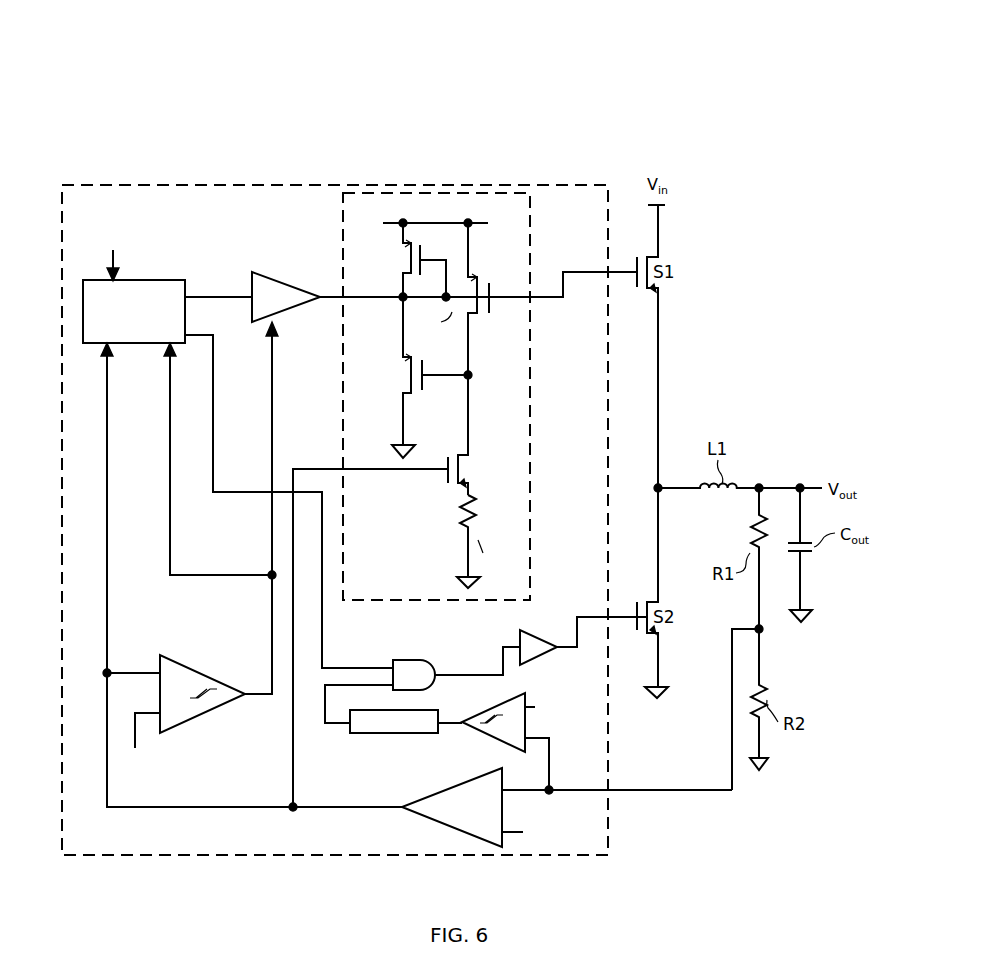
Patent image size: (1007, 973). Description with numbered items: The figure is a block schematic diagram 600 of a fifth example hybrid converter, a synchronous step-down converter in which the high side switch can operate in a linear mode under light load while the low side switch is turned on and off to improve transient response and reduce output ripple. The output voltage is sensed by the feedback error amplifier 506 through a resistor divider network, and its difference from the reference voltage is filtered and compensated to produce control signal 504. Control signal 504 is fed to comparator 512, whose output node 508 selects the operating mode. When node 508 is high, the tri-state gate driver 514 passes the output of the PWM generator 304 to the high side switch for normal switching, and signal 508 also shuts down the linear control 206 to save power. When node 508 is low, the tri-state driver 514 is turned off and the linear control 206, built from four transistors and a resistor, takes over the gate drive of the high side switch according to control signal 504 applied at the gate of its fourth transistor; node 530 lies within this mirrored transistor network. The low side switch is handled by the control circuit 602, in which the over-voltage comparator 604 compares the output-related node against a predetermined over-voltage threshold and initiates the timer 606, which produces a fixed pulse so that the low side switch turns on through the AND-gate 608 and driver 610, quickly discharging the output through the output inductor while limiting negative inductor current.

The block schematic diagram 600 is at (742, 45).
The linear control 206 is at (505, 220).
The control circuit 602 is at (335, 520).
The PWM generator 304 is at (134, 286).
The tri-state gate driver 514 is at (290, 280).
The node 508 is at (275, 414).
The node 530 is at (472, 374).
The comparator 512 is at (188, 656).
The control signal 504 is at (291, 805).
The feedback error amplifier 506 is at (460, 782).
The AND-gate 608 is at (416, 668).
The driver 610 is at (538, 634).
The over-voltage comparator 604 is at (488, 710).
The timer 606 is at (360, 728).